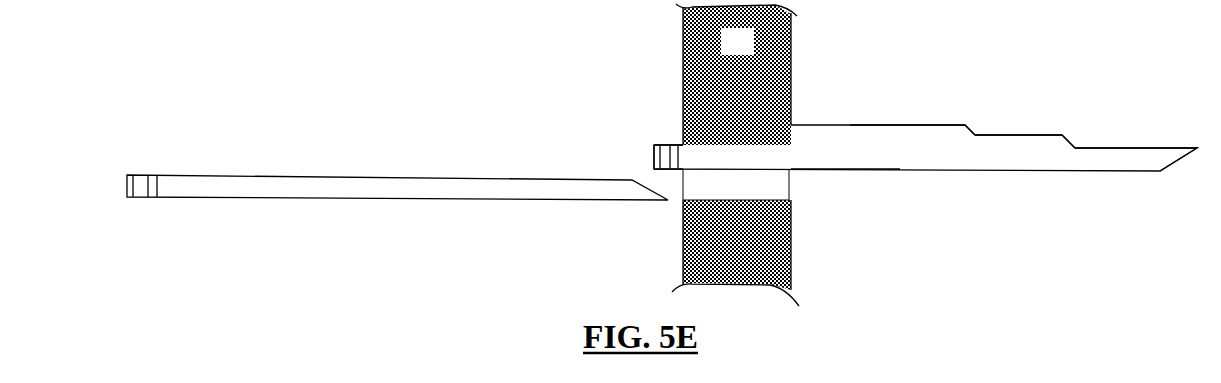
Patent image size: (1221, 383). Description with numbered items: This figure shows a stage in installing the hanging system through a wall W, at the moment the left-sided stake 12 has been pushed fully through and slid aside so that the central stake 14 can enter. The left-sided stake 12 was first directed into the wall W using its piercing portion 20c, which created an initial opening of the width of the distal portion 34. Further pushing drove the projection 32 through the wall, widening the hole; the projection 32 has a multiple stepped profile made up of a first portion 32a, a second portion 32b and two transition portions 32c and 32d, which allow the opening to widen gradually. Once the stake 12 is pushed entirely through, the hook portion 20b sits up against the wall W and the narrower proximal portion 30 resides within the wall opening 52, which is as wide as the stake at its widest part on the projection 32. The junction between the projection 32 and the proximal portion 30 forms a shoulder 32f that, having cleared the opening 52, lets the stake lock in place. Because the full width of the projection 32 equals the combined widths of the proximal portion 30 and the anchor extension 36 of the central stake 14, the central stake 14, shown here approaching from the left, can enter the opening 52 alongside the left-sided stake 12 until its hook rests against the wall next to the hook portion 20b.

The left-sided stake 12 is at (652, 144).
The central stake 14 is at (126, 186).
The hook portion 20b is at (654, 158).
The piercing portion 20c is at (1188, 147).
The proximal portion 30 is at (683, 118).
The projection 32 is at (852, 122).
The first portion 32a is at (896, 123).
The second portion 32b is at (1027, 134).
The transition portion 32c is at (972, 128).
The transition portion 32d is at (1067, 140).
The shoulder 32f is at (797, 138).
The distal portion 34 is at (1113, 158).
The anchor extension 36 is at (325, 188).
The wall opening 52 is at (758, 185).
The wall W is at (746, 50).